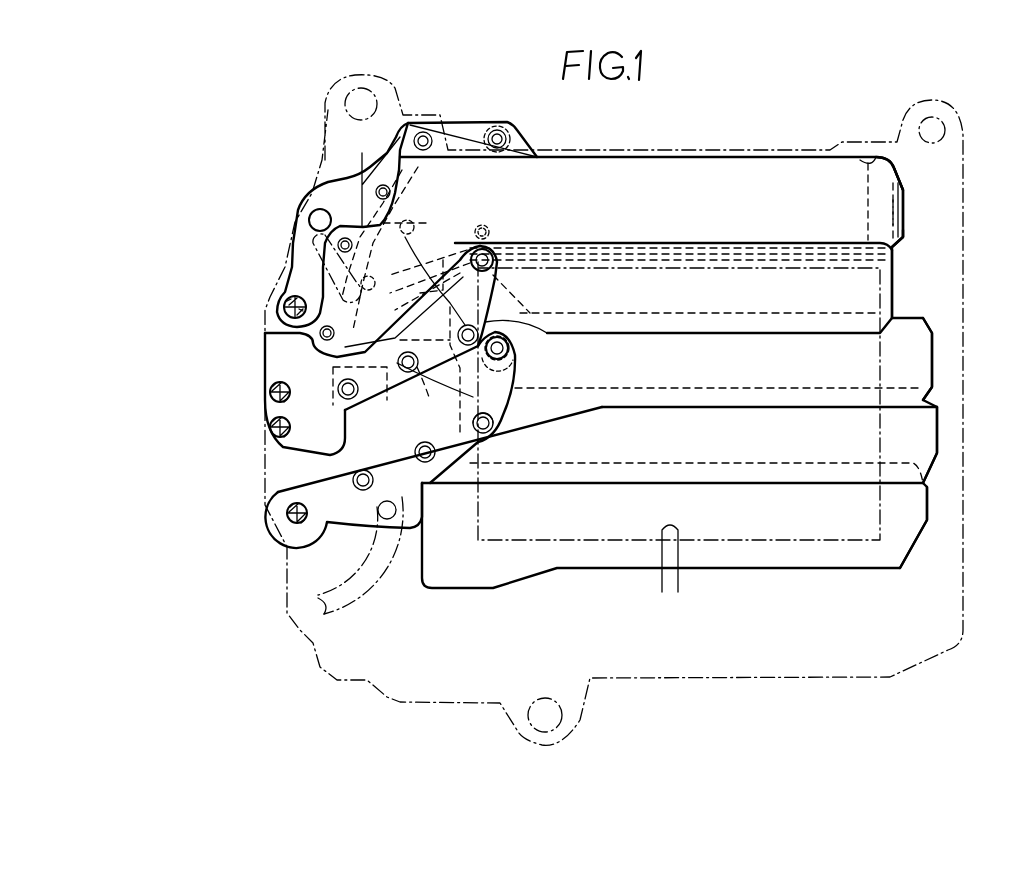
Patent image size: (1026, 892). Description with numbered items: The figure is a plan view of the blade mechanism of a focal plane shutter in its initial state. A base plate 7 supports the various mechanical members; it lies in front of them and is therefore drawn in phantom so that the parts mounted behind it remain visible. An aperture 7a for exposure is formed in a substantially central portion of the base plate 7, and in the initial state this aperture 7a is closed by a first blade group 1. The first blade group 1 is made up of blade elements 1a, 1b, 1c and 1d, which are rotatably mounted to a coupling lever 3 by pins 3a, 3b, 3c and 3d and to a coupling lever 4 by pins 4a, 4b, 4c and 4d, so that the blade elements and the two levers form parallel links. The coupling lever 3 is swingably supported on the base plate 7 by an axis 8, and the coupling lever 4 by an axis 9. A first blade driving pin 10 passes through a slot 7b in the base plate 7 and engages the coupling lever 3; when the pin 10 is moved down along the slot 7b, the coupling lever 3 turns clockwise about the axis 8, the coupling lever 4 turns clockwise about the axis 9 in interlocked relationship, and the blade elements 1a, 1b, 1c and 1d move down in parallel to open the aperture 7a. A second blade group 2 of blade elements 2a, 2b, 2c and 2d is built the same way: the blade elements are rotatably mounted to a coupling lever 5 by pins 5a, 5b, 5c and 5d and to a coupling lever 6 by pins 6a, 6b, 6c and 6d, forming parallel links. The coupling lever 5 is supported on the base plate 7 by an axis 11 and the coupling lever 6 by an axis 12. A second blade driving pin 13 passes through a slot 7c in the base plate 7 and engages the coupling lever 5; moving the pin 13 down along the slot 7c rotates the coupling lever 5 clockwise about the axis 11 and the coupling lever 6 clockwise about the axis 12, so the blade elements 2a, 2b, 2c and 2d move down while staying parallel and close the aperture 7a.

The first blade group 1 is at (808, 578).
The blade element 1a is at (918, 548).
The blade element 1b is at (938, 463).
The blade element 1c is at (935, 360).
The blade element 1d is at (895, 287).
The second blade group 2 is at (905, 250).
The blade element 2a is at (905, 232).
The blade element 2b is at (900, 210).
The blade element 2c is at (905, 190).
The blade element 2d is at (872, 160).
The coupling lever 3 is at (310, 535).
The pin 3a is at (375, 485).
The pin 3b is at (437, 455).
The pin 3c is at (498, 425).
The pin 3d is at (513, 358).
The coupling lever 4 is at (305, 440).
The pin 4a is at (343, 389).
The pin 4b is at (490, 392).
The pin 4c is at (520, 322).
The pin 4d is at (493, 266).
The coupling lever 5 is at (320, 190).
The pin 5a is at (340, 247).
The pin 5b is at (376, 187).
The pin 5c is at (424, 132).
The pin 5d is at (498, 130).
The coupling lever 6 is at (270, 360).
The pin 6a is at (322, 336).
The pin 6b is at (362, 280).
The pin 6c is at (413, 232).
The pin 6d is at (490, 233).
The base plate 7 is at (742, 677).
The aperture 7a is at (664, 570).
The slot 7b is at (318, 606).
The slot 7c is at (315, 232).
The axis 8 is at (287, 513).
The axis 9 is at (272, 427).
The first blade driving pin 10 is at (380, 515).
The axis 11 is at (284, 307).
The axis 12 is at (272, 392).
The second blade driving pin 13 is at (309, 219).